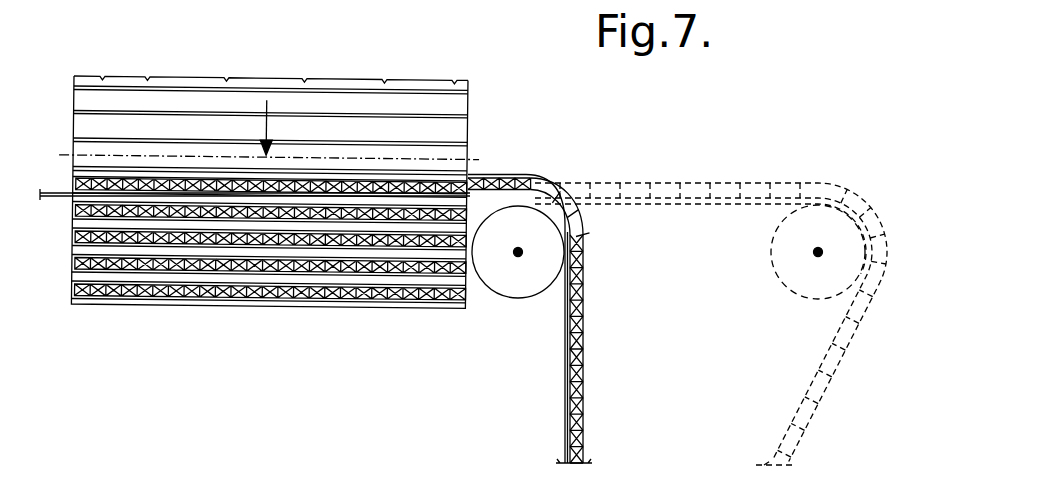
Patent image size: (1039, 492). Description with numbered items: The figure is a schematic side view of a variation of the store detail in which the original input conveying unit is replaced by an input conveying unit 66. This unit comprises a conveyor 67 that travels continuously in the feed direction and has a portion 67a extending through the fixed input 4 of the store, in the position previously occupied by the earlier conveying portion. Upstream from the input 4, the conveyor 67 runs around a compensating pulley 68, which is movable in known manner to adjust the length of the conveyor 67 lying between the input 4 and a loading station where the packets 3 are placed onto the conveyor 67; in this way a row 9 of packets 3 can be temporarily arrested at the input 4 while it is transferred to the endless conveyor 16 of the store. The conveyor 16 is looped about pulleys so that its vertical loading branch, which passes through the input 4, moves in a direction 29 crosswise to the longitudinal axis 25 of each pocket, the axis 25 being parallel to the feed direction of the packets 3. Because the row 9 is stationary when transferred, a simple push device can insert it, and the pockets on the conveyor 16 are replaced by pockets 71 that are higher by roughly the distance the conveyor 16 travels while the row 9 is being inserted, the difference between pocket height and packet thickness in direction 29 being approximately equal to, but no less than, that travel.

The packet 3 is at (764, 184).
The fixed input 4 is at (478, 177).
The row of packets 9 is at (466, 293).
The endless conveyor 16 is at (478, 120).
The longitudinal axis 25 is at (60, 155).
The direction 29 is at (268, 98).
The input conveying unit 66 is at (536, 178).
The conveyor 67 is at (591, 257).
The portion of conveyor 67a is at (120, 196).
The compensating pulley 68 is at (512, 282).
The pocket 71 is at (368, 96).